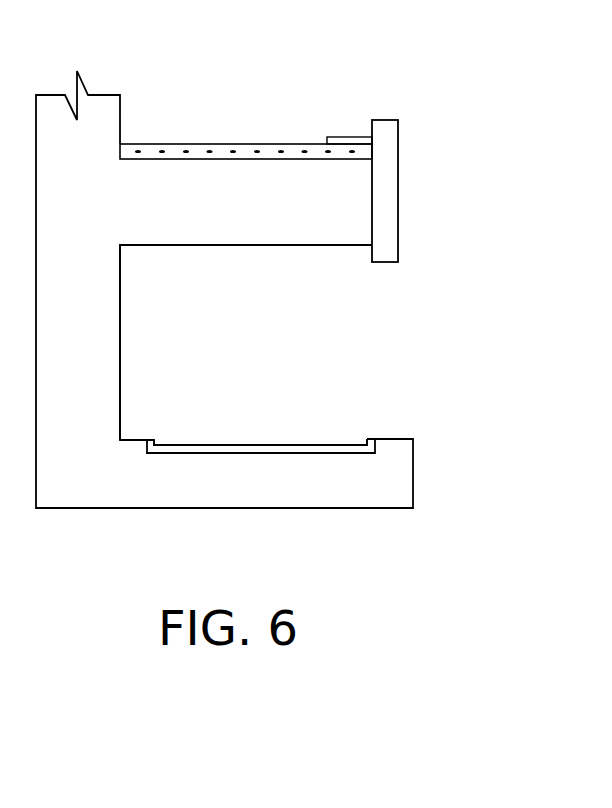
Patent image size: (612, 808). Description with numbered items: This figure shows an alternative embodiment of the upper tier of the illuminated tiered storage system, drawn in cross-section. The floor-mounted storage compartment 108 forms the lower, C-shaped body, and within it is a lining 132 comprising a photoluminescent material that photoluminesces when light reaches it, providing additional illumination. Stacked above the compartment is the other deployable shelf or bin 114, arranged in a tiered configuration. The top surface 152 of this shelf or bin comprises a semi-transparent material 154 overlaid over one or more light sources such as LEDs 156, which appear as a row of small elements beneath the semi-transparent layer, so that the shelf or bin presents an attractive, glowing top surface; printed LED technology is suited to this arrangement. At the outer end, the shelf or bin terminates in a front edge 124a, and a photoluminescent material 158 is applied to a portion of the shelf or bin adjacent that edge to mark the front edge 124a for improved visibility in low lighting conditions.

The floor-mounted storage compartment 108 is at (393, 478).
The deployable shelf or bin 114 is at (178, 236).
The lining 132 is at (260, 445).
The top surface 152 is at (295, 83).
The semi-transparent material 154 is at (157, 143).
The LEDs 156 is at (258, 145).
The photoluminescent material 158 is at (350, 137).
The front edge 124a is at (385, 119).